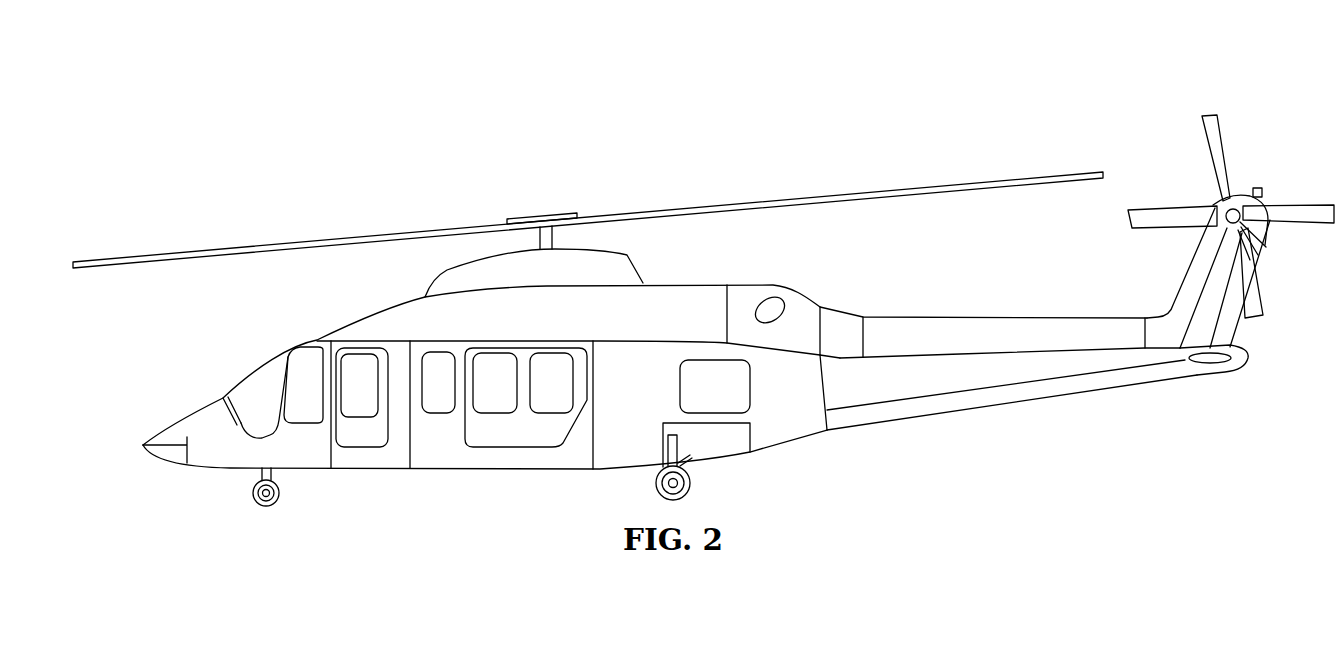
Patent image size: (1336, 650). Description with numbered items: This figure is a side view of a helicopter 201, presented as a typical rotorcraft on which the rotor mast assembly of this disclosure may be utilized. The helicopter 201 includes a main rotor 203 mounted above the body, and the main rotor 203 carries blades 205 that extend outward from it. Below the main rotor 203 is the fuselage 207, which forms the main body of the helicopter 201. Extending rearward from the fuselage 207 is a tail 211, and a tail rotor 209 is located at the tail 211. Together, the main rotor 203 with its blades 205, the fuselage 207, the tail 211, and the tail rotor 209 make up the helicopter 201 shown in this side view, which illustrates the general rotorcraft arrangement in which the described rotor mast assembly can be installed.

The helicopter 201 is at (340, 102).
The main rotor 203 is at (558, 192).
The blades 205 is at (307, 240).
The fuselage 207 is at (428, 471).
The tail rotor 209 is at (1267, 172).
The tail 211 is at (957, 417).